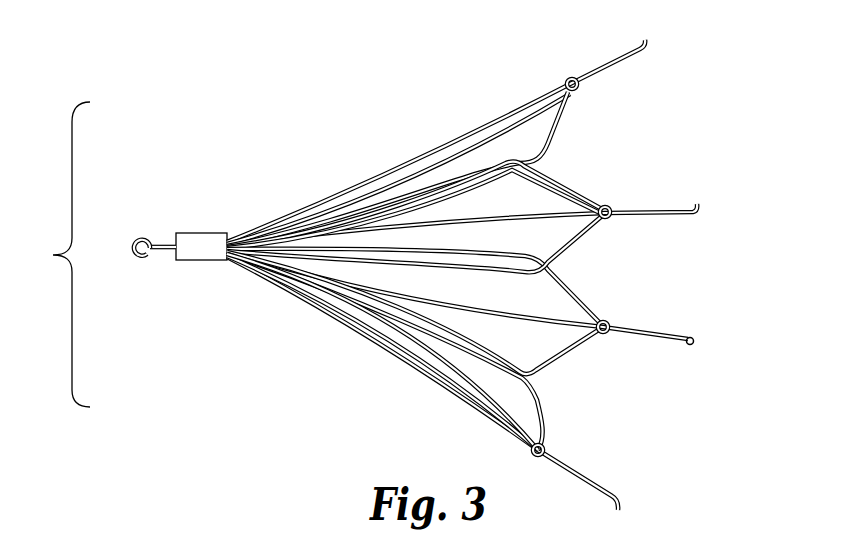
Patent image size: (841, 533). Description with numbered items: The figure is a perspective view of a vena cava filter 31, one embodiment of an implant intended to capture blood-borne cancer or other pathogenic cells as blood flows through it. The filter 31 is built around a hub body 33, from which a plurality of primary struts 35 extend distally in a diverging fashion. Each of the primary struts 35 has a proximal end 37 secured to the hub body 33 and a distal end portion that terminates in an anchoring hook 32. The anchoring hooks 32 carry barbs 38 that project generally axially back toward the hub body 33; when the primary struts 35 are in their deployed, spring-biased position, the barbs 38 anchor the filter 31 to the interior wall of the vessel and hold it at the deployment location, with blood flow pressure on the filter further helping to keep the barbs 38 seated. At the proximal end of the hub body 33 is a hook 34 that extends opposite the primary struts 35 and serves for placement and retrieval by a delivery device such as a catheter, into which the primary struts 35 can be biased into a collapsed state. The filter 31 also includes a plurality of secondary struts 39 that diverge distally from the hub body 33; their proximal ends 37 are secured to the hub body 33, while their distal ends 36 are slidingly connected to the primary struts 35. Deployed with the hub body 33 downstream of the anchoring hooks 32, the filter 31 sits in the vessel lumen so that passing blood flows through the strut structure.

The vena cava filter 31 is at (58, 254).
The anchoring hooks 32 is at (695, 215).
The hub body 33 is at (203, 233).
The hook 34 is at (133, 240).
The primary struts 35 is at (675, 207).
The distal ends 36 is at (572, 78).
The proximal ends 37 is at (238, 237).
The barbs 38 is at (690, 345).
The secondary struts 39 is at (543, 150).